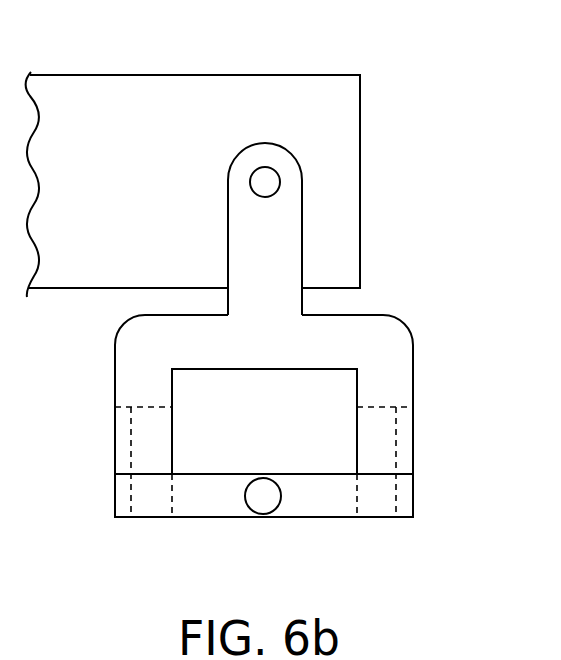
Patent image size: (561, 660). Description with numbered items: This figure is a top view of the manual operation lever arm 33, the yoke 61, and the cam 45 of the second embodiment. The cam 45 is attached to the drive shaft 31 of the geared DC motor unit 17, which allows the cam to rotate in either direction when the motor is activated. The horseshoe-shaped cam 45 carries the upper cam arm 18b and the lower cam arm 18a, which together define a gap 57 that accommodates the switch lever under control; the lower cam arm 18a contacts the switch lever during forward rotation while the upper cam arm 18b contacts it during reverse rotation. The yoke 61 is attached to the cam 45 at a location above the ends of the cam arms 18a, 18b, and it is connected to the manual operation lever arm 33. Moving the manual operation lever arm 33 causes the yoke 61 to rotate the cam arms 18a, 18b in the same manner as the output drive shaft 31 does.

The geared DC motor unit 17 is at (139, 105).
The drive shaft 31 is at (267, 167).
The cam 45 is at (386, 345).
The lower cam arm 18a is at (115, 441).
The upper cam arm 18b is at (413, 447).
The gap 57 is at (207, 460).
The manual operation lever arm 33 is at (246, 518).
The yoke 61 is at (325, 519).